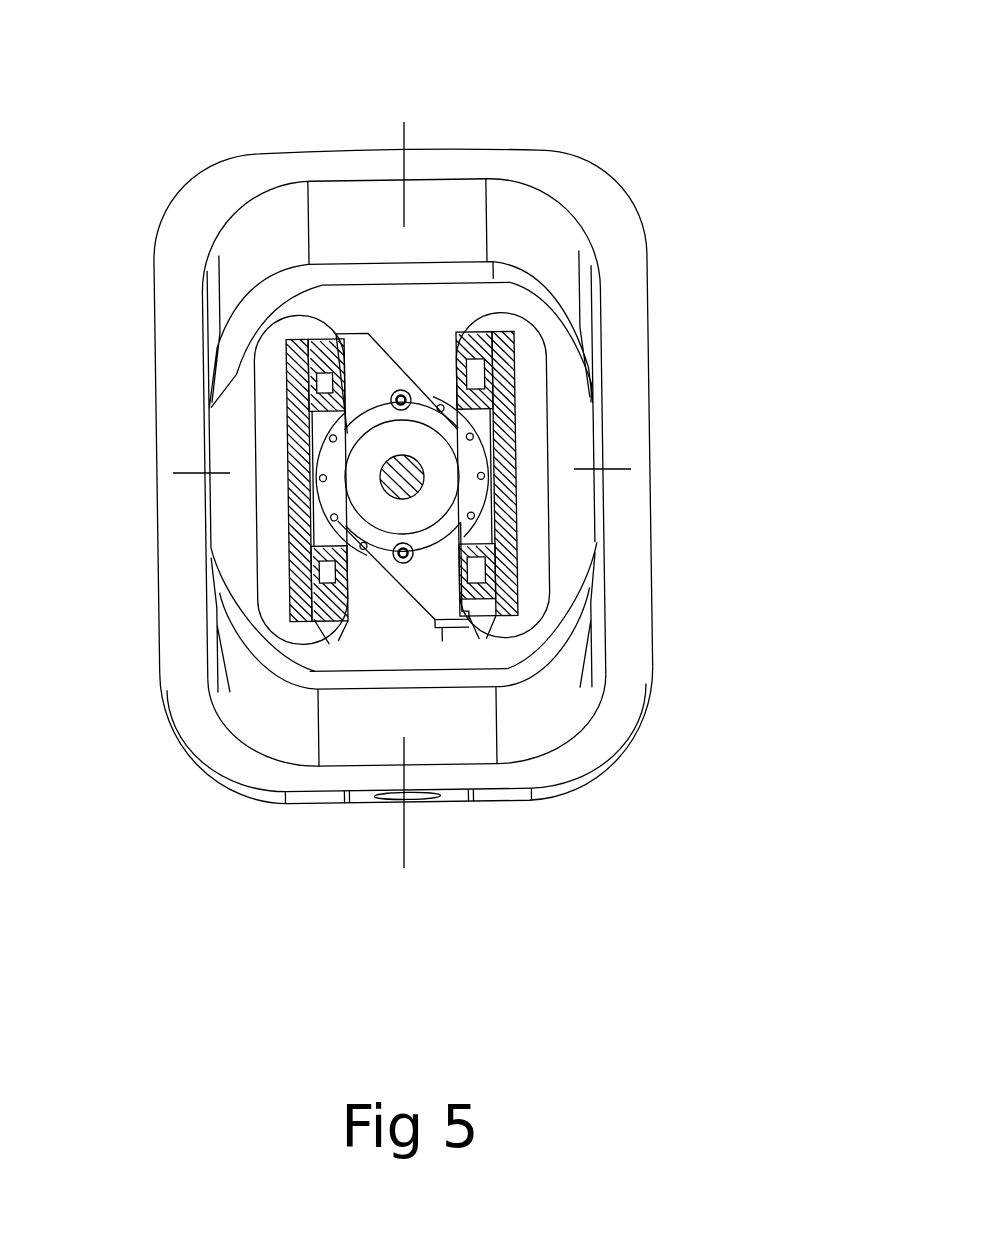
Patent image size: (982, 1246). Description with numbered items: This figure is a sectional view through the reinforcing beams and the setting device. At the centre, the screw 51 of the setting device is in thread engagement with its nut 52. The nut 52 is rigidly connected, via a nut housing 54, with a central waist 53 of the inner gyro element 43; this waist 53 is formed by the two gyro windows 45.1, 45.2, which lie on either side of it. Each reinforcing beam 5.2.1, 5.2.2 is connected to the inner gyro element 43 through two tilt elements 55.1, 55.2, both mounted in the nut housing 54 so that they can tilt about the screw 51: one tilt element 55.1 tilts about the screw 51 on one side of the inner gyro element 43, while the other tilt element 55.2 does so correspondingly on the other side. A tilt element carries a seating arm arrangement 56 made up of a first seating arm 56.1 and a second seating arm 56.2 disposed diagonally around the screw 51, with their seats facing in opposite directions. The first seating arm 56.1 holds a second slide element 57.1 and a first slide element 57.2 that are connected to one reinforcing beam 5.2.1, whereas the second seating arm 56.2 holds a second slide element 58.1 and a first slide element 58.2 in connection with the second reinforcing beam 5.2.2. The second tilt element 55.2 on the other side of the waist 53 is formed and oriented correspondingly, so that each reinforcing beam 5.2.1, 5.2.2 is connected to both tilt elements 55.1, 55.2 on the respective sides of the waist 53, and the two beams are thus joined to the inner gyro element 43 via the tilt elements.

The inner gyro element 43 is at (293, 303).
The gyro window 45.1 is at (530, 378).
The gyro window 45.2 is at (275, 350).
The screw 51 is at (398, 470).
The nut 52 is at (480, 442).
The central waist 53 is at (417, 350).
The nut housing 54 is at (438, 467).
The tilt element 55.1 is at (443, 630).
The tilt element 55.2 is at (347, 610).
The pivot plate 56 is at (357, 333).
The first seating arm 56.1 is at (432, 563).
The second seating arm 56.2 is at (373, 372).
The second slide element 57.1 is at (490, 565).
The first slide element 57.2 is at (483, 570).
The second slide element 58.1 is at (310, 397).
The first slide element 58.2 is at (315, 378).
The reinforcing beam 5.2.1 is at (352, 610).
The reinforcing beam 5.2.2 is at (500, 587).